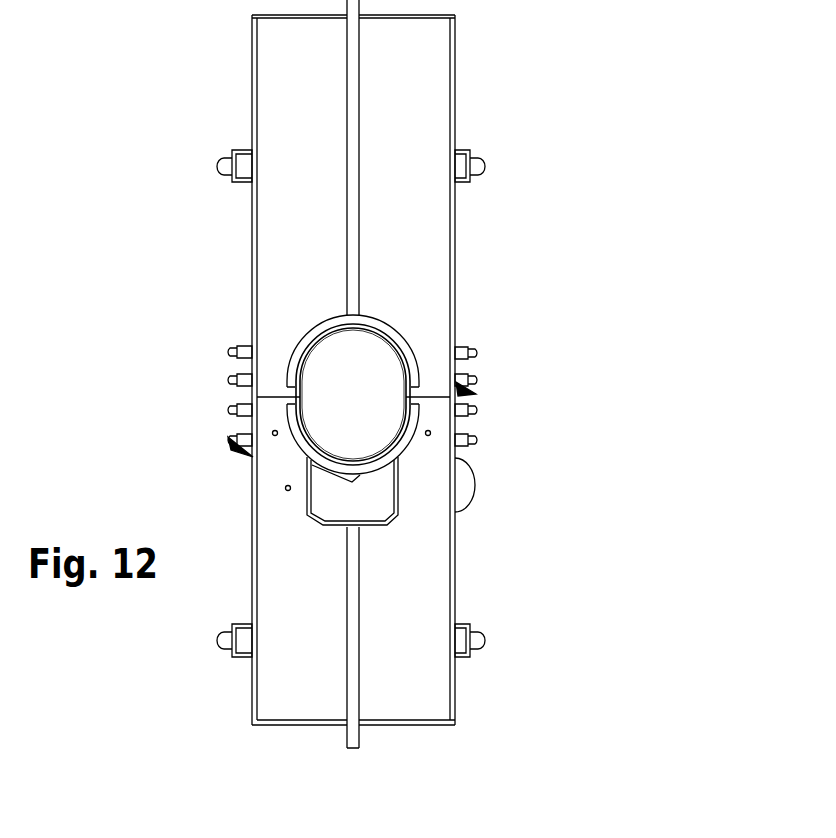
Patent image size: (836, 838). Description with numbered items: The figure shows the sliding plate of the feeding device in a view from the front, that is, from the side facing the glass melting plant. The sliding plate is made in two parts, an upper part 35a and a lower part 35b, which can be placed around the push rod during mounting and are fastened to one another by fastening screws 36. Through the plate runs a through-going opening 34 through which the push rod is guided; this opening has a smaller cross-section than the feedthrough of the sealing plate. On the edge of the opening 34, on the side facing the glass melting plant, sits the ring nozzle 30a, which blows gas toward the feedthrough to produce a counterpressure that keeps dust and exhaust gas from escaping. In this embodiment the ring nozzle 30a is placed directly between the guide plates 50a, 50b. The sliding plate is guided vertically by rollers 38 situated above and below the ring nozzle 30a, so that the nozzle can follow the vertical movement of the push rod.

The through-going opening 34 is at (335, 380).
The ring nozzle 30a is at (408, 352).
The upper part of sliding plate 35a is at (436, 60).
The lower part of sliding plate 35b is at (438, 593).
The fastening screws 36 is at (462, 410).
The rollers 38 is at (466, 150).
The guide plate 50a is at (378, 320).
The guide plate 50b is at (392, 520).